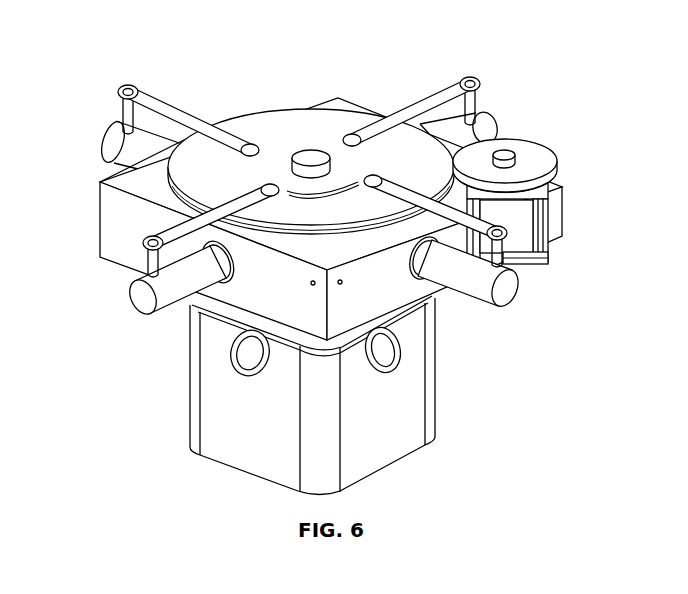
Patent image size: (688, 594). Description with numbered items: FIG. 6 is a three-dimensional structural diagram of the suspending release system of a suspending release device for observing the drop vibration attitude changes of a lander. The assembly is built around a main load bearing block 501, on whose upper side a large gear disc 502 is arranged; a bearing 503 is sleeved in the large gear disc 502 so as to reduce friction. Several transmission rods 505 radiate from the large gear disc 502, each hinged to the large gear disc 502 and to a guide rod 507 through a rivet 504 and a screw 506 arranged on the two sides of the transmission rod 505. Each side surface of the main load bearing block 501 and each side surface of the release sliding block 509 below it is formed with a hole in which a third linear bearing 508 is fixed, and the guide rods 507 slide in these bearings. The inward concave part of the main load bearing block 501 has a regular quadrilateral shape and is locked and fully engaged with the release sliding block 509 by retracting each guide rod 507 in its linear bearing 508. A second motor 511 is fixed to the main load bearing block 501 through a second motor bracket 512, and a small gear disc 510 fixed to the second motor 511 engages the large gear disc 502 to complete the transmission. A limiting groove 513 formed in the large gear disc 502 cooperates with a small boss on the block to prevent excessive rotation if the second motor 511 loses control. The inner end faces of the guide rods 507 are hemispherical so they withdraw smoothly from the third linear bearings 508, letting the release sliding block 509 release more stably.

The main load bearing block 501 is at (135, 222).
The large gear disc 502 is at (190, 183).
The bearing 503 is at (290, 167).
The rivet 504 is at (266, 190).
The transmission rod 505 is at (150, 240).
The screw 506 is at (152, 264).
The guide rod 507 is at (180, 286).
The third linear bearing 508 is at (245, 349).
The release sliding block 509 is at (220, 424).
The small gear disc 510 is at (591, 152).
The second motor 511 is at (518, 198).
The second motor bracket 512 is at (523, 245).
The limiting groove 513 is at (331, 188).